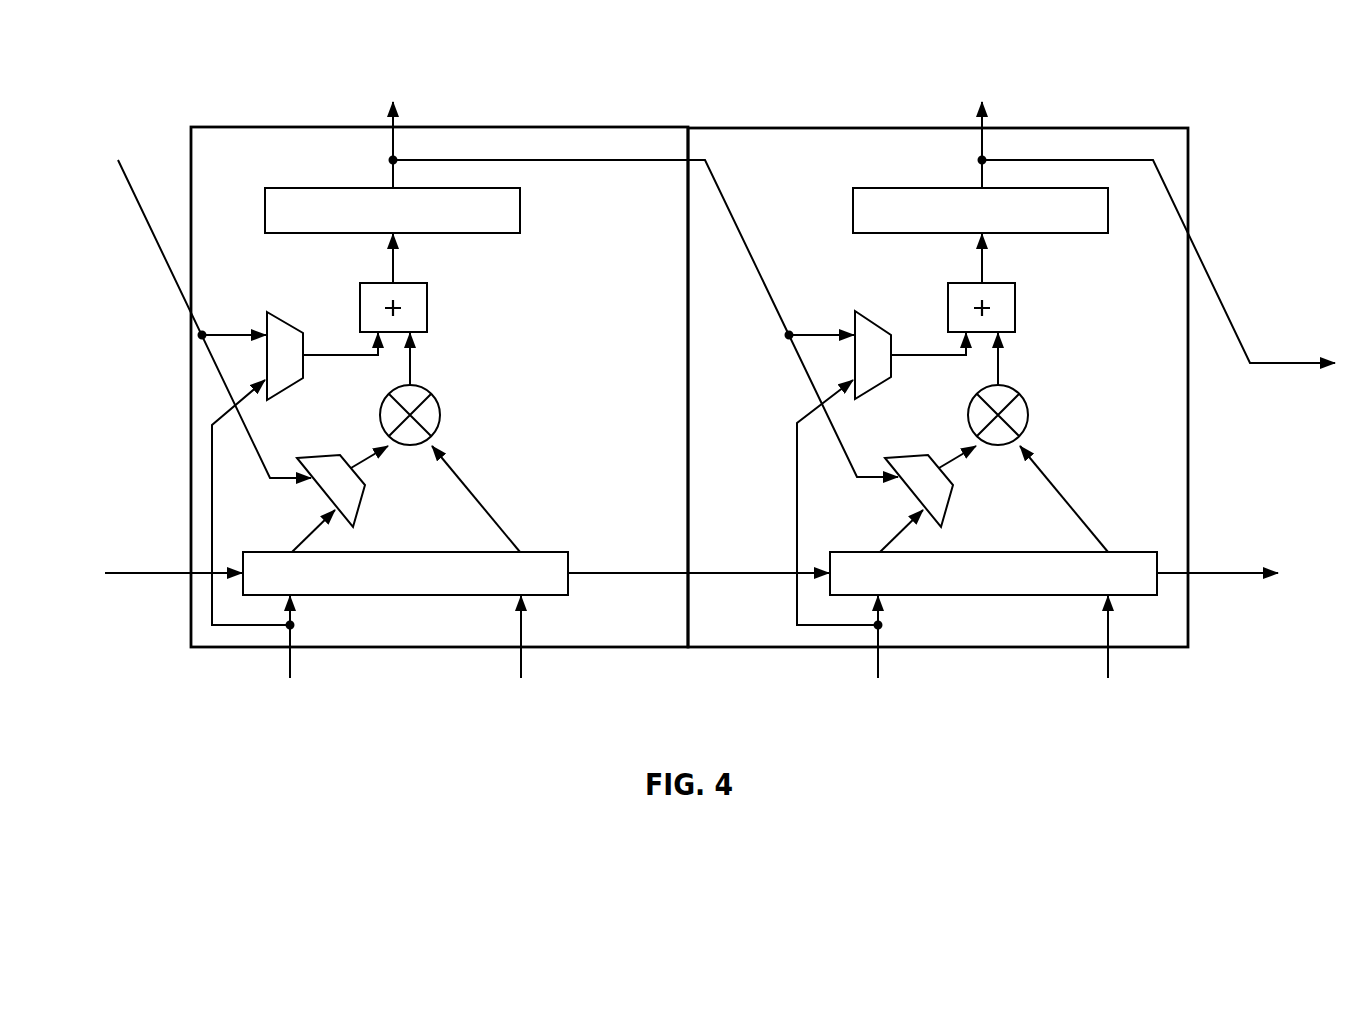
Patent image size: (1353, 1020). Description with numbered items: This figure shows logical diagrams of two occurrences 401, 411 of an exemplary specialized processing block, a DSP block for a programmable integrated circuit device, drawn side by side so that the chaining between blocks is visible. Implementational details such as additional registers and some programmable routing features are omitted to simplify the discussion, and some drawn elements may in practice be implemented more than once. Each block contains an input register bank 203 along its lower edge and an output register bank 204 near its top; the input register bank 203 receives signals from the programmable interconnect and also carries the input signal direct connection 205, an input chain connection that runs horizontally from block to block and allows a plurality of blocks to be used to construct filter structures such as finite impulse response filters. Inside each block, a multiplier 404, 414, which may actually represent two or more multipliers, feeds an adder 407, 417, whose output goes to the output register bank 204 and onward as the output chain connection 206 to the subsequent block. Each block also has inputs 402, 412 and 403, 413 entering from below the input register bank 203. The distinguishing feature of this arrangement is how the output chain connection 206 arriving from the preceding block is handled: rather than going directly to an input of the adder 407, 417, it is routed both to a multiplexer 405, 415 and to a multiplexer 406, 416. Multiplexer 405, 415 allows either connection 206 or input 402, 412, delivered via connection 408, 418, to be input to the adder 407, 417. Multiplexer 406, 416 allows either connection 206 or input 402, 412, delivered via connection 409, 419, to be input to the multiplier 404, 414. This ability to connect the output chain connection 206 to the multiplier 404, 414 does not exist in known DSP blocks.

The DSP block occurrence 401 is at (260, 127).
The DSP block occurrence 411 is at (758, 128).
The input register bank 203 is at (537, 552).
The output register bank 204 is at (337, 188).
The input signal direct connection 205 is at (152, 575).
The output chain connection 206 is at (146, 218).
The input 402 is at (290, 660).
The second input of first stage 403 is at (521, 660).
The multiplier 404 is at (422, 383).
The multiplexer 405 is at (283, 319).
The multiplexer 406 is at (317, 456).
The adder 407 is at (412, 283).
The connection 408 is at (212, 488).
The connection 409 is at (302, 542).
The input 412 is at (878, 660).
The second input of second stage 413 is at (1108, 660).
The multiplier 414 is at (1010, 383).
The multiplexer 415 is at (872, 318).
The multiplexer 416 is at (905, 456).
The adder 417 is at (1000, 283).
The connection 418 is at (797, 515).
The connection 419 is at (890, 542).